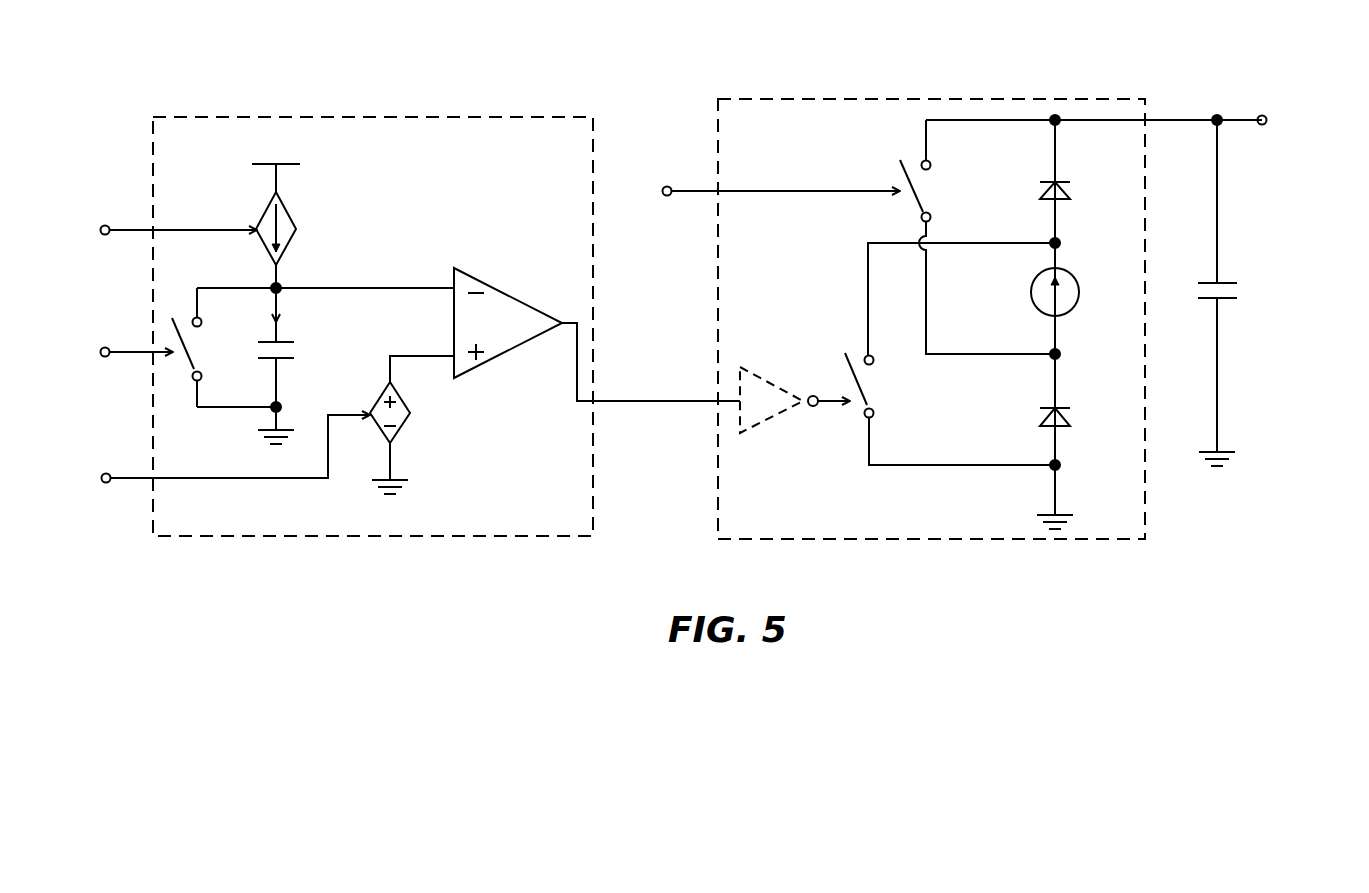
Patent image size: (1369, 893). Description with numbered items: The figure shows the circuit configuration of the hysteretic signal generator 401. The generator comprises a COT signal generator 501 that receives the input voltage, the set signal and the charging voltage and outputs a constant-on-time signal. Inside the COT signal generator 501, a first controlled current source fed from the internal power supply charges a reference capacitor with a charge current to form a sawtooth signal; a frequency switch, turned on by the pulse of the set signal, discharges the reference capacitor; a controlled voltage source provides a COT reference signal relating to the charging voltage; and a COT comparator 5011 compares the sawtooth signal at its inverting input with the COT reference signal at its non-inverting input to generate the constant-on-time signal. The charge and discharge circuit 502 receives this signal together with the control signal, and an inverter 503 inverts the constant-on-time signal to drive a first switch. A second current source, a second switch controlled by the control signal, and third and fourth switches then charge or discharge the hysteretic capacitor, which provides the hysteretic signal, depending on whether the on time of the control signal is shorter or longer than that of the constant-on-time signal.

The hysteretic signal generator 401 is at (149, 82).
The COT signal generator 501 is at (390, 114).
The charge and discharge circuit 502 is at (990, 99).
The inverter 503 is at (783, 370).
The COT comparator 5011 is at (493, 288).